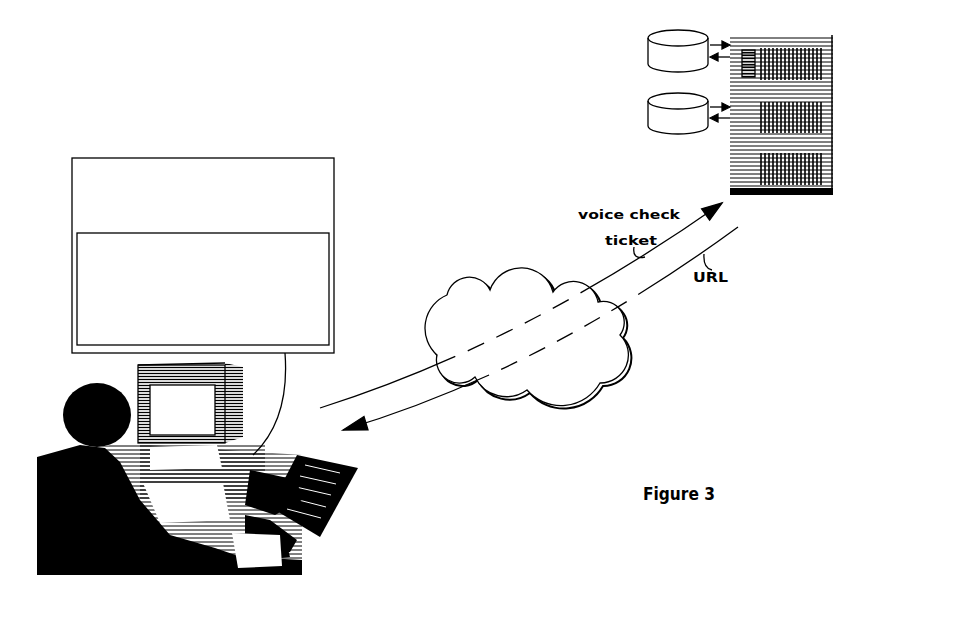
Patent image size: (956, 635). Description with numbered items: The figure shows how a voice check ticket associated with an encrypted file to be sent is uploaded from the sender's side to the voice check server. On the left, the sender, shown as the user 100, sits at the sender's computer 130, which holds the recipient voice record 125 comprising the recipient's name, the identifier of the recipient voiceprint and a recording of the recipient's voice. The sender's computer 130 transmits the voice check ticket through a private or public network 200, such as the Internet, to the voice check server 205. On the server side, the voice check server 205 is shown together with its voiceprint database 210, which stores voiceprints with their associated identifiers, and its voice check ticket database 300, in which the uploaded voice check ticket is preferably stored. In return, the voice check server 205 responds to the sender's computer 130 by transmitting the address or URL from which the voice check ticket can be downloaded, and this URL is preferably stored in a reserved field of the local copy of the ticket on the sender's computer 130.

The user 100 is at (197, 484).
The recipient voice record 125 is at (178, 154).
The sender's computer 130 is at (240, 403).
The network 200 is at (552, 402).
The voice check server 205 is at (784, 34).
The voiceprint database 210 is at (647, 51).
The voice check ticket database 300 is at (647, 114).